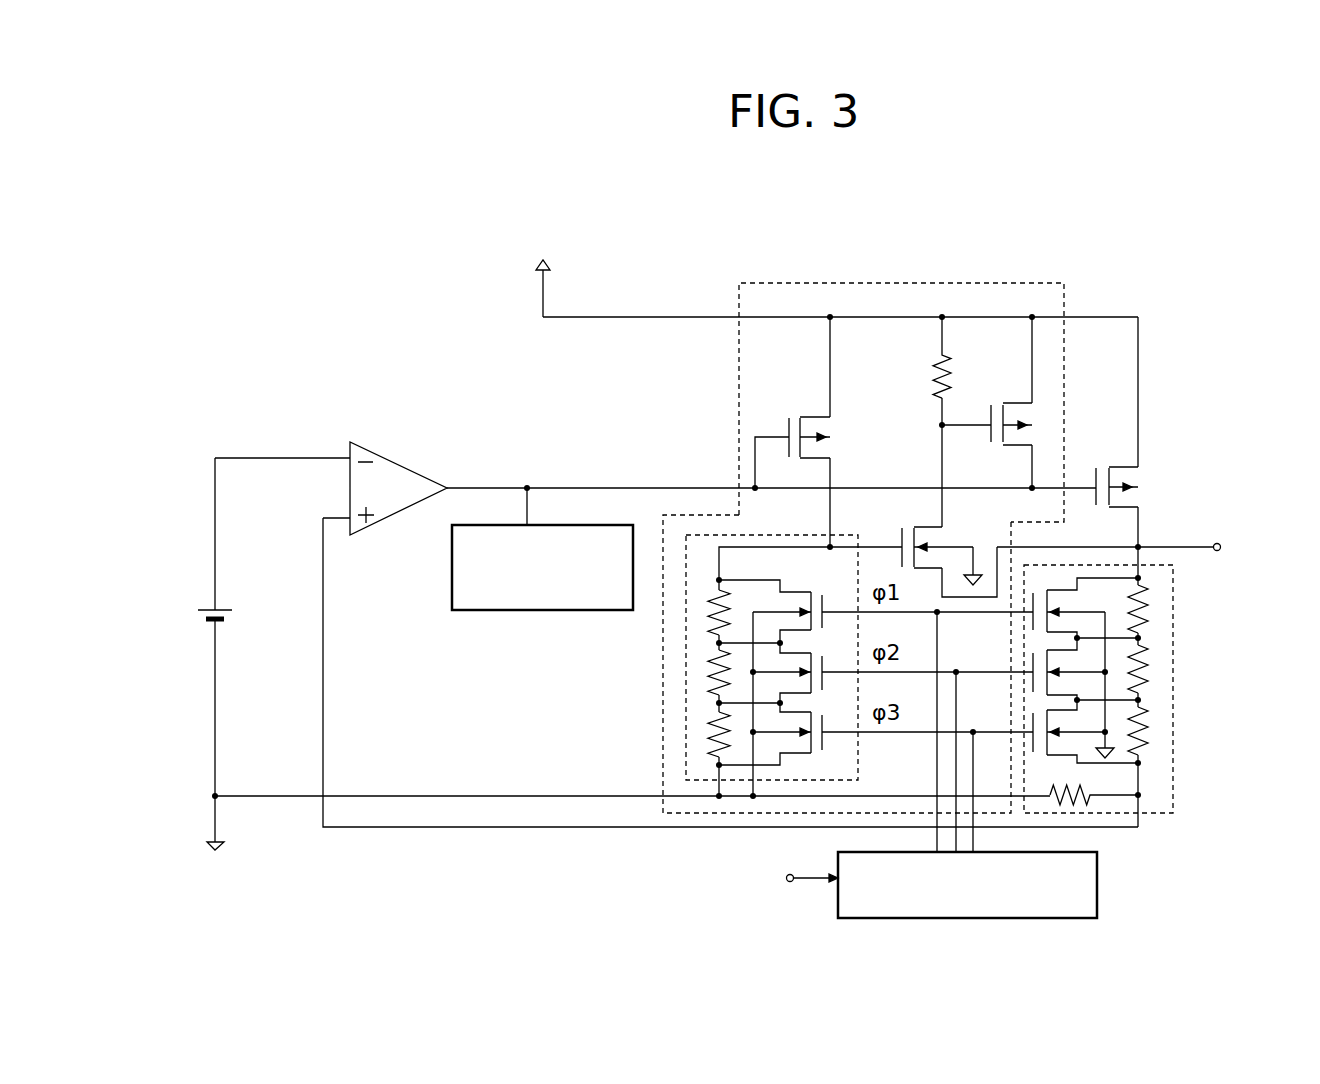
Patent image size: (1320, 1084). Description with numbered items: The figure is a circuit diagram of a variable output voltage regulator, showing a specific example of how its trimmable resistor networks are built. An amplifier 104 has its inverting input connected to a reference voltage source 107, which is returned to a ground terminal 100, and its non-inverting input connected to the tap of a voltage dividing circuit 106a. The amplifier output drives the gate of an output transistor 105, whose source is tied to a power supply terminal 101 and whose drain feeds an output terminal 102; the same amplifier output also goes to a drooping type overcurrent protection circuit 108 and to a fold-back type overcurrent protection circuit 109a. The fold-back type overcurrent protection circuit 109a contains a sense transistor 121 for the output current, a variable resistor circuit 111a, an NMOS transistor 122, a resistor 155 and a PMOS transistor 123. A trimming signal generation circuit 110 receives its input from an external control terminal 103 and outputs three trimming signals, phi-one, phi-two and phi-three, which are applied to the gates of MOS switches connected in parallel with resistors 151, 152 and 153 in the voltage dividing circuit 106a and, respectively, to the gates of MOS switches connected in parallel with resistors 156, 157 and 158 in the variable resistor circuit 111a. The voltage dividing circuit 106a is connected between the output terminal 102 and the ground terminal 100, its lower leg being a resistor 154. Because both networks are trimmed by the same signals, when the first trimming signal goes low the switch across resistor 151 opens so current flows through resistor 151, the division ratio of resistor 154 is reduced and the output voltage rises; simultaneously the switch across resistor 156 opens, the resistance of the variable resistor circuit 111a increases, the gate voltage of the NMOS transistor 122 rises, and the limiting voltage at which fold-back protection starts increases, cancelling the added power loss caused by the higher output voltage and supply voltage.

The ground terminal 100 is at (238, 840).
The power supply terminal 101 is at (574, 286).
The output terminal 102 is at (1121, 528).
The external control terminal 103 is at (780, 878).
The amplifier 104 is at (421, 468).
The output transistor 105 is at (1163, 465).
The voltage dividing circuit 106a is at (1130, 723).
The reference voltage source 107 is at (184, 627).
The drooping type overcurrent protection circuit 108 is at (502, 597).
The fold-back type overcurrent protection circuit 109a is at (851, 402).
The trimming signal generation circuit 110 is at (1018, 885).
The variable resistor circuit 111a is at (721, 638).
The sense transistor 121 is at (791, 411).
The NMOS transistor 122 is at (901, 512).
The PMOS transistor 123 is at (1028, 393).
The resistor 151 is at (1189, 629).
The resistor 152 is at (1189, 690).
The resistor 153 is at (1189, 752).
The resistor 154 is at (1103, 825).
The resistor 155 is at (907, 376).
The resistor 156 is at (646, 617).
The resistor 157 is at (646, 678).
The resistor 158 is at (646, 741).